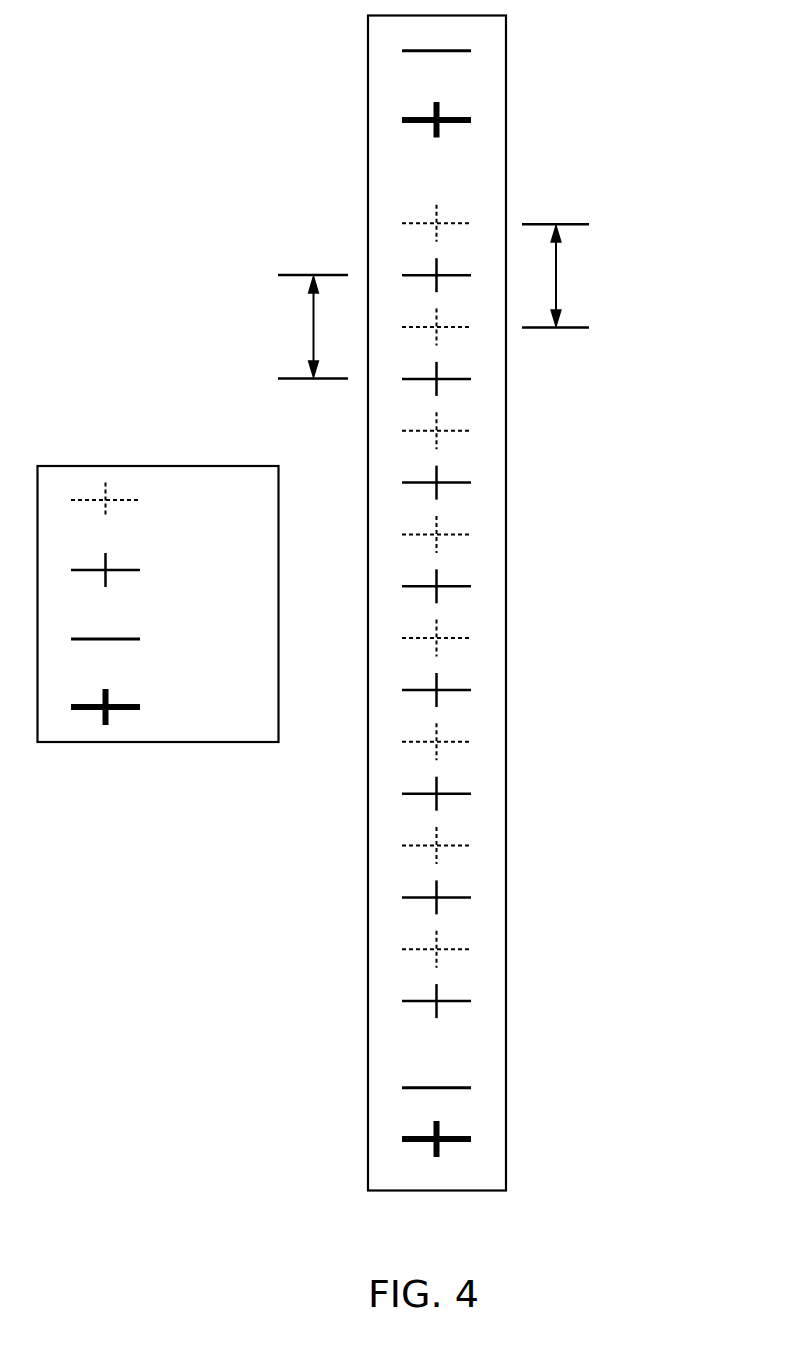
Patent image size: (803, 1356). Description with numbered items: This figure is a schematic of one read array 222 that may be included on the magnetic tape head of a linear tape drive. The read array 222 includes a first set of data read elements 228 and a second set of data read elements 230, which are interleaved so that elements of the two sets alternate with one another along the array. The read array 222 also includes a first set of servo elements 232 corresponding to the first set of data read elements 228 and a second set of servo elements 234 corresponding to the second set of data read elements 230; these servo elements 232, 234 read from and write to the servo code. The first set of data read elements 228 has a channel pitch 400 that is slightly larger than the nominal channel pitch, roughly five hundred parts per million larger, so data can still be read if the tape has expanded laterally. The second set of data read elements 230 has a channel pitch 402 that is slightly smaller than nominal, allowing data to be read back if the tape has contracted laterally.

The read array 222 is at (405, 1264).
The first set of data read elements 228 is at (271, 586).
The second set of data read elements 230 is at (271, 638).
The first set of servo elements 232 is at (271, 569).
The second set of servo elements 234 is at (271, 629).
The channel pitch 400 is at (556, 275).
The channel pitch 402 is at (312, 325).